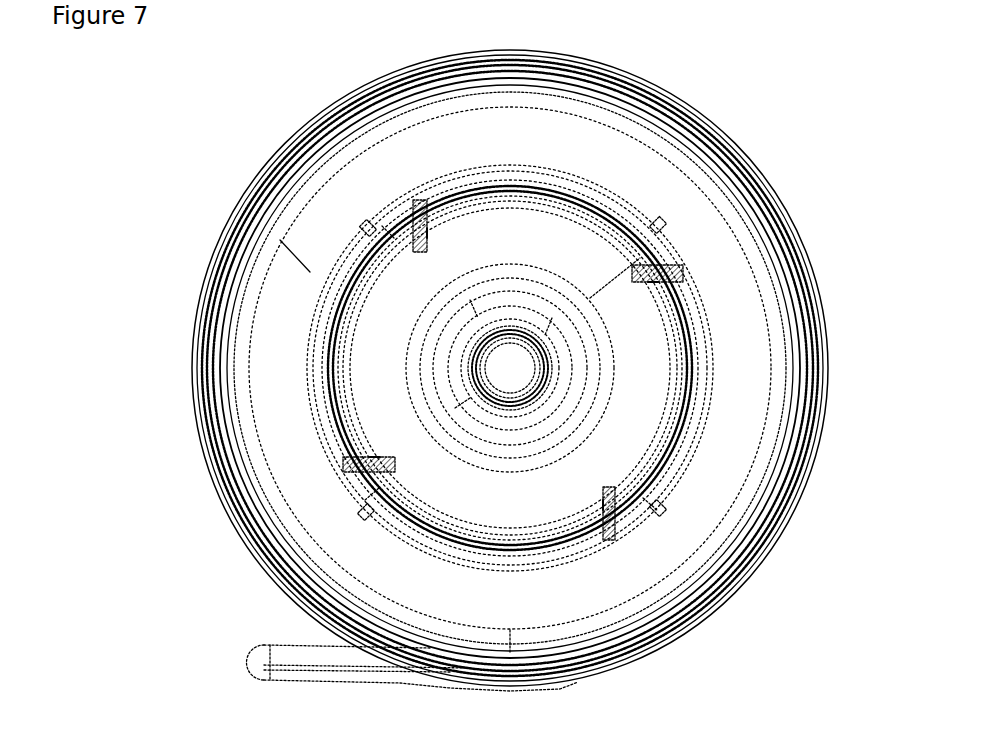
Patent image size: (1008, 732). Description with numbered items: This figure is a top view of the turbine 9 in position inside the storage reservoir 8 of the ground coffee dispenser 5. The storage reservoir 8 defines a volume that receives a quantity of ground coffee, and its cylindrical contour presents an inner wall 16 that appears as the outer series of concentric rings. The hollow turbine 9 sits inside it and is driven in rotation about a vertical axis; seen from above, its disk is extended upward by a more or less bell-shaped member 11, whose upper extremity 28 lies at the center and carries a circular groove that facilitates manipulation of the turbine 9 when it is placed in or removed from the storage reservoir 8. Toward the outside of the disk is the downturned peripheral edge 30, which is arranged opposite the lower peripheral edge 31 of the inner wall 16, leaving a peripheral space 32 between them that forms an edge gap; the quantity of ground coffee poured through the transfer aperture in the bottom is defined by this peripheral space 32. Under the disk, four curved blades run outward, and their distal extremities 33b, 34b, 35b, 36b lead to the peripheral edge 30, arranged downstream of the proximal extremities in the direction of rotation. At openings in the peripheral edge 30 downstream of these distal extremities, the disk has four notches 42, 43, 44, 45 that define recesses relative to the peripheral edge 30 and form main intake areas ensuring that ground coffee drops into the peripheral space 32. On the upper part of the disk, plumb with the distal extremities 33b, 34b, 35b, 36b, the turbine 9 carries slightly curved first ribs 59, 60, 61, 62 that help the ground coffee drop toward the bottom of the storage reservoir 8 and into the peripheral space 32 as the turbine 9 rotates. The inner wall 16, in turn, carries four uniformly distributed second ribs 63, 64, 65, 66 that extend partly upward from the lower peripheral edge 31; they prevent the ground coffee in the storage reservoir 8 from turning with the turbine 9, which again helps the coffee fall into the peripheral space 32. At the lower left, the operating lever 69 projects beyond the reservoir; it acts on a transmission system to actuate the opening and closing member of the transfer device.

The ground coffee dispenser 5 is at (818, 70).
The storage reservoir 8 is at (730, 137).
The turbine 9 is at (665, 348).
The bell-shaped member 11 is at (613, 408).
The inner wall 16 is at (760, 393).
The upper extremity 28 is at (508, 358).
The downturned peripheral edge 30 is at (338, 316).
The lower peripheral edge 31 is at (315, 367).
The peripheral space 32 is at (318, 350).
The distal extremity 33b is at (613, 522).
The distal extremity 34b is at (678, 268).
The distal extremity 35b is at (415, 213).
The distal extremity 36b is at (360, 470).
The notch 42 is at (372, 494).
The notch 43 is at (650, 504).
The notch 44 is at (655, 245).
The notch 45 is at (388, 232).
The first rib 59 is at (605, 505).
The first rib 60 is at (652, 284).
The first rib 61 is at (426, 232).
The first rib 62 is at (375, 458).
The second rib 63 is at (368, 226).
The second rib 64 is at (658, 222).
The second rib 65 is at (665, 510).
The second rib 66 is at (370, 520).
The operating lever 69 is at (268, 680).